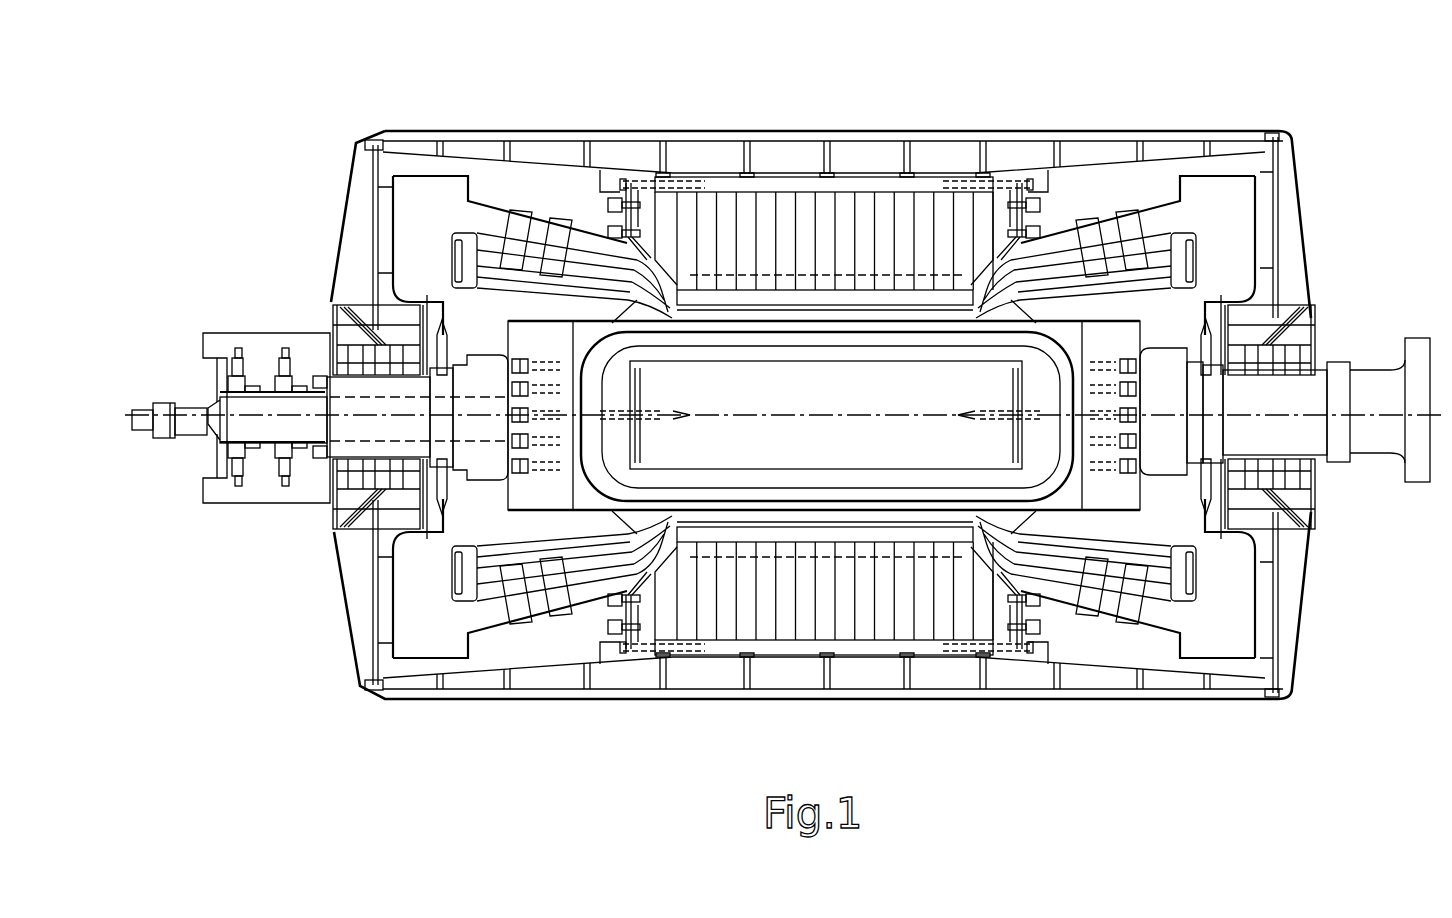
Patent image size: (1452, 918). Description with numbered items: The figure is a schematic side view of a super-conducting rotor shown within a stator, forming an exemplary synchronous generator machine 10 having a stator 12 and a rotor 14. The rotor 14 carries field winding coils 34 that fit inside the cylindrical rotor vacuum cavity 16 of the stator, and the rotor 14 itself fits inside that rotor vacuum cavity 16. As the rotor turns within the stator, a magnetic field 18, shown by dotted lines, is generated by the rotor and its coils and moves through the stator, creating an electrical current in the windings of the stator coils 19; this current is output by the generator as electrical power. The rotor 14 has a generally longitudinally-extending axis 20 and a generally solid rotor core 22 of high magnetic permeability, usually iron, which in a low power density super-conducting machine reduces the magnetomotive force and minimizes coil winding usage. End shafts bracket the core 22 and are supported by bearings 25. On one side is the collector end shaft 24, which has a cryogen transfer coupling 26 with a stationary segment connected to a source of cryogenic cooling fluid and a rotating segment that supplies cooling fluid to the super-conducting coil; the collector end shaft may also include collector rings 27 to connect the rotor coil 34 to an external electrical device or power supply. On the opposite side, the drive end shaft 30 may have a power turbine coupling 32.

The synchronous generator machine 10 is at (552, 56).
The stator 12 is at (725, 220).
The rotor 14 is at (527, 500).
The rotor vacuum cavity 16 is at (488, 311).
The magnetic field 18 is at (928, 265).
The stator coils 19 is at (1160, 222).
The longitudinally-extending axis 20 is at (338, 417).
The rotor core 22 is at (785, 445).
The collector end shaft 24 is at (400, 395).
The bearings 25 is at (385, 537).
The cryogen transfer coupling 26 is at (180, 400).
The collector rings 27 is at (275, 495).
The drive end shaft 30 is at (1300, 390).
The power turbine coupling 32 is at (1420, 483).
The field winding coils 34 is at (1082, 345).